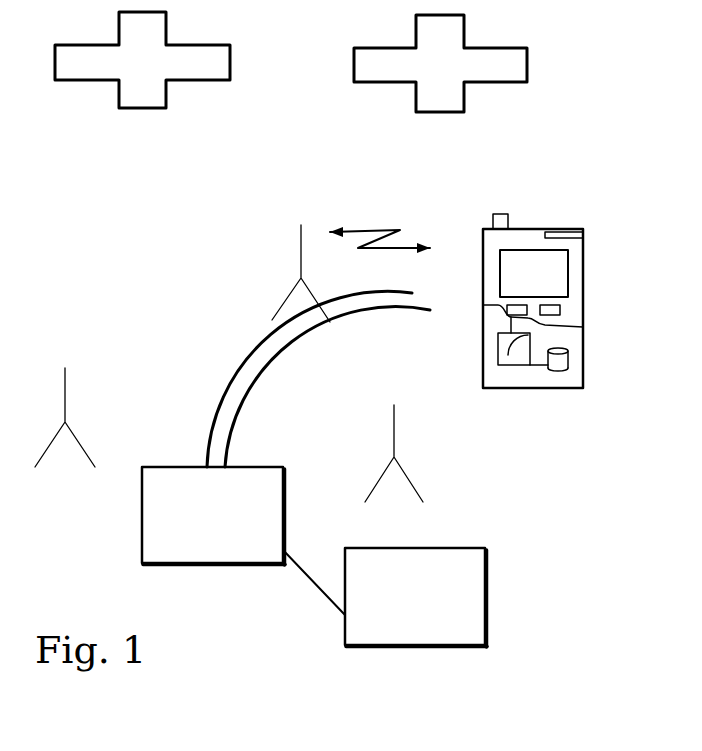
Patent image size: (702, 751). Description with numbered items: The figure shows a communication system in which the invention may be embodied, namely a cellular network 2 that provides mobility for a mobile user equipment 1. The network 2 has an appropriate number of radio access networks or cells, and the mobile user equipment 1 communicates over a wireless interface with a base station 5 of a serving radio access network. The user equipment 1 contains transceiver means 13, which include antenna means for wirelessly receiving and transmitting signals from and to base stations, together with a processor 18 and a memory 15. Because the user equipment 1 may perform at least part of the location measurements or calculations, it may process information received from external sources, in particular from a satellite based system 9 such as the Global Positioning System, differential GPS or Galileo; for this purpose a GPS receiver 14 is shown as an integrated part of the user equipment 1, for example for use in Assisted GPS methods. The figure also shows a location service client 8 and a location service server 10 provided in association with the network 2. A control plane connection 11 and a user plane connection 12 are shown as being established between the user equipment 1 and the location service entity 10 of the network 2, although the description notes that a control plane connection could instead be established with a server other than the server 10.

The mobile user equipment 1 is at (563, 265).
The cellular network 2 is at (126, 248).
The base station 5 is at (301, 258).
The location service client 8 is at (430, 645).
The satellite based system 9 is at (125, 108).
The location service server 10 is at (190, 563).
The control plane connection 11 is at (223, 403).
The user plane connection 12 is at (280, 358).
The transceiver means 13 is at (505, 214).
The GPS receiver 14 is at (573, 232).
The memory 15 is at (568, 365).
The processor 18 is at (511, 333).